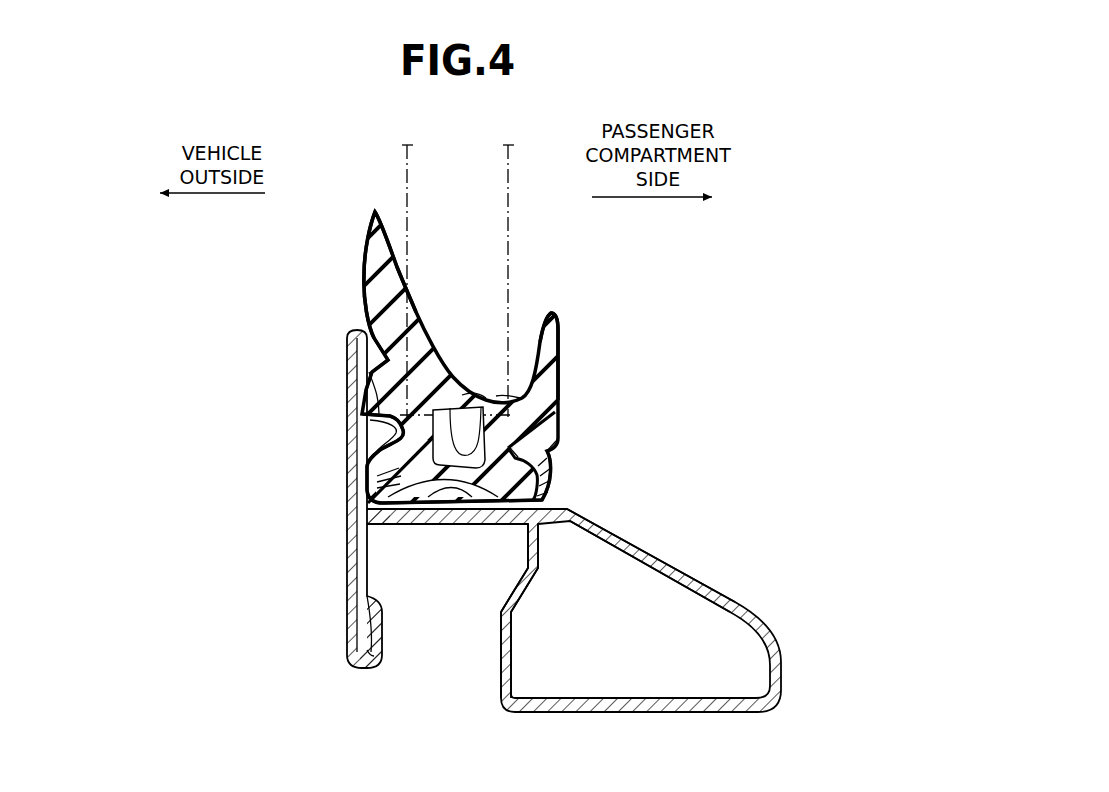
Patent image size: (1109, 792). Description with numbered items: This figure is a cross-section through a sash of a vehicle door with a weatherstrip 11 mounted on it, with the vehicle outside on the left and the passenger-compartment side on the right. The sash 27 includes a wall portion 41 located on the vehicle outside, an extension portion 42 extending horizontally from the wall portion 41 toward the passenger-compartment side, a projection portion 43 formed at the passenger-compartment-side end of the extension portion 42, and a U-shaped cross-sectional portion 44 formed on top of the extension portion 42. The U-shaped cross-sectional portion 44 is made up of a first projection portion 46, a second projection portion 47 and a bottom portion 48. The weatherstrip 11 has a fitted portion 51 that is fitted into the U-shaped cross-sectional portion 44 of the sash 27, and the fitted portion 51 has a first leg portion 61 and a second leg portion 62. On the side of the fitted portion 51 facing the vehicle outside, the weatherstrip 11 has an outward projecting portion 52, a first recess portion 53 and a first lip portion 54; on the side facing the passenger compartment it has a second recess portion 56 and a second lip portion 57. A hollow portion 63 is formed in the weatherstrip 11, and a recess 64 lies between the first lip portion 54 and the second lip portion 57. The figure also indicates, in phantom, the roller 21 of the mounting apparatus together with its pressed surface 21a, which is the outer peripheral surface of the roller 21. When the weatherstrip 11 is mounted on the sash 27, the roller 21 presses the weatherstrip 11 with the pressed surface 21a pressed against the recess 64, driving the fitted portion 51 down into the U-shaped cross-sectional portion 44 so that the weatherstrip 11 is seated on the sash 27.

The weatherstrip 11 is at (356, 275).
The roller 21 is at (514, 181).
The pressed surface 21a is at (452, 404).
The sash 27 is at (696, 570).
The wall portion 41 is at (348, 527).
The extension portion 42 is at (436, 526).
The projection portion 43 is at (786, 656).
The U-shaped cross-sectional portion 44 is at (557, 455).
The first projection portion 46 is at (388, 440).
The second projection portion 47 is at (551, 482).
The bottom portion 48 is at (474, 526).
The fitted portion 51 is at (378, 488).
The outward projecting portion 52 is at (392, 397).
The first recess portion 53 is at (386, 416).
The first lip portion 54 is at (373, 211).
The second recess portion 56 is at (551, 455).
The second lip portion 57 is at (552, 355).
The first leg portion 61 is at (402, 526).
The second leg portion 62 is at (546, 502).
The hollow portion 63 is at (505, 398).
The recess 64 is at (468, 398).